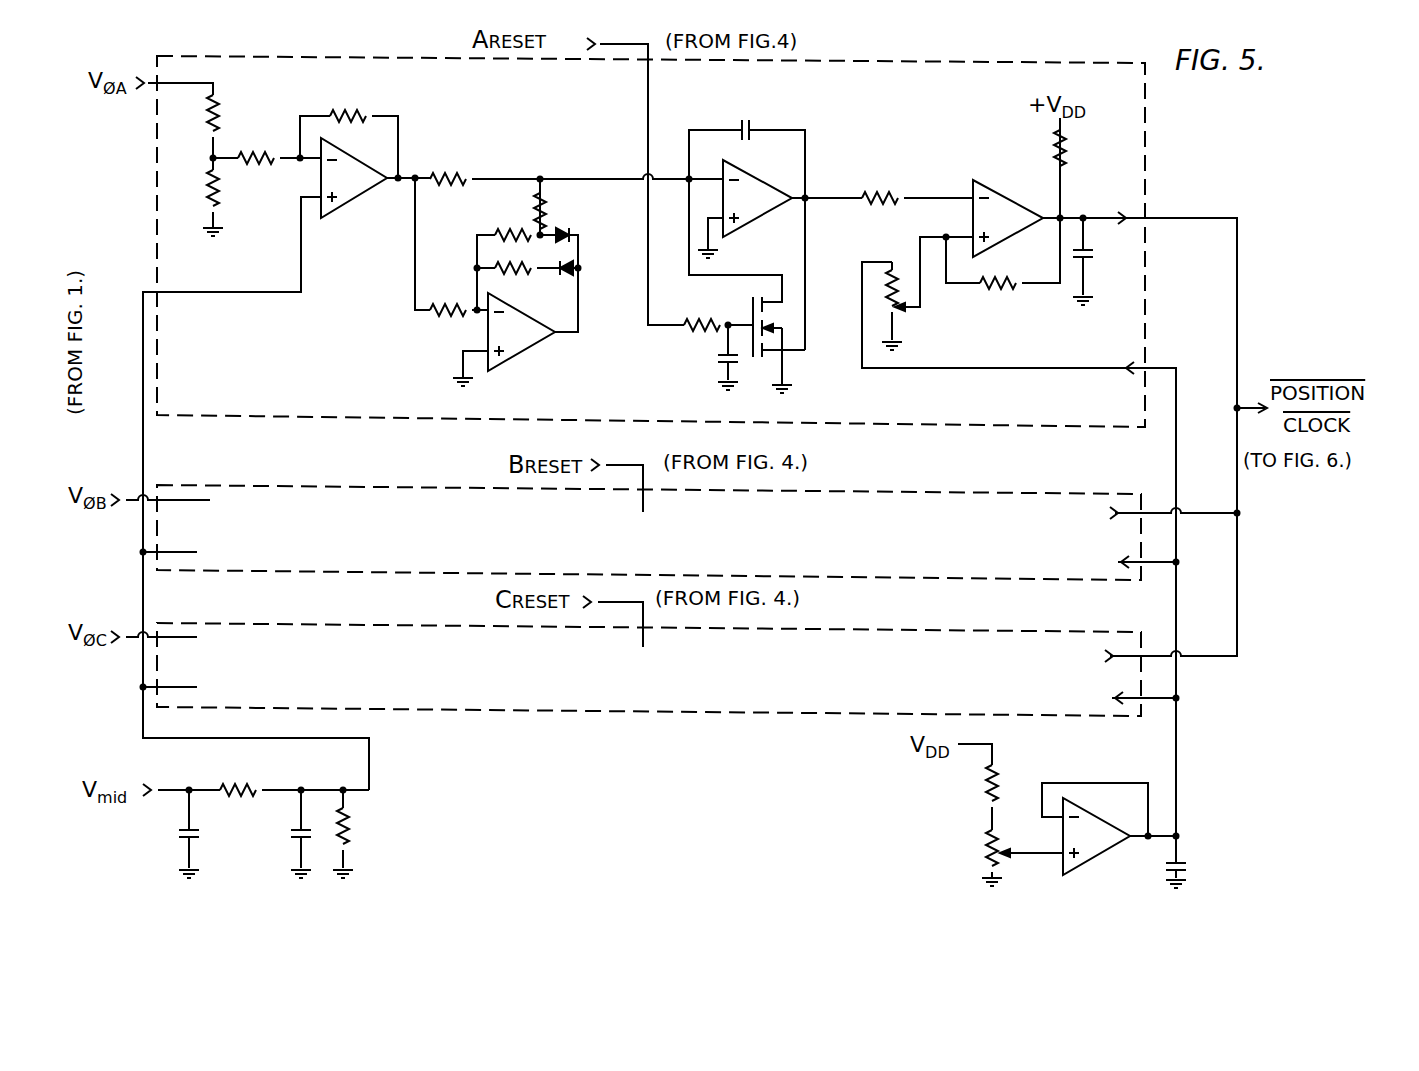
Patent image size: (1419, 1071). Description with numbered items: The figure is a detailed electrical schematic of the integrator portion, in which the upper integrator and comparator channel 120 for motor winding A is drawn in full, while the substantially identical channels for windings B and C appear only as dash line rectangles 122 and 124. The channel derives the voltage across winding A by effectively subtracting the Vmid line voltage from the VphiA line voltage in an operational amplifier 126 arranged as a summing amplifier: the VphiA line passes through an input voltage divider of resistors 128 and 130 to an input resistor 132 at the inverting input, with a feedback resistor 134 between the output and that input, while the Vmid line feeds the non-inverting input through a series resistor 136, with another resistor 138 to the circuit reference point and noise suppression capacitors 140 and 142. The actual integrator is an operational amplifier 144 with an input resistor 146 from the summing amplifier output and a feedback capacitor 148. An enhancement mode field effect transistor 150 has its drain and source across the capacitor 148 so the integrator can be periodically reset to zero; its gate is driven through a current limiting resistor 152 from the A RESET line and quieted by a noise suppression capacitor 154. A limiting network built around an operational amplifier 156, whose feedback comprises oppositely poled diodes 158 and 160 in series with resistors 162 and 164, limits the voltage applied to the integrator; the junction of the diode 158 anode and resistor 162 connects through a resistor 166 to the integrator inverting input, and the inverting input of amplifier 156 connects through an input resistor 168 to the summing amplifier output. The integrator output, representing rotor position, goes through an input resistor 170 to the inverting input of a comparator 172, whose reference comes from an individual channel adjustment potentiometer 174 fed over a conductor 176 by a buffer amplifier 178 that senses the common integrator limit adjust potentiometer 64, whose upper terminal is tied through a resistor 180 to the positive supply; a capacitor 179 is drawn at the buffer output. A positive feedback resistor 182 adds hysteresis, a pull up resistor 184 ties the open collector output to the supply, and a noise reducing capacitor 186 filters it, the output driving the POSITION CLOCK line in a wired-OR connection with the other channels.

The common integrator limit adjust potentiometer 64 is at (985, 847).
The integrator and comparator channel 120 is at (1150, 192).
The integrator channel 122 is at (908, 493).
The integrator channel 124 is at (893, 632).
The operational amplifier 126 is at (347, 205).
The resistor 128 is at (219, 122).
The resistor 130 is at (222, 188).
The input resistor 132 is at (272, 152).
The feedback resistor 134 is at (361, 110).
The series resistor 136 is at (256, 782).
The resistor 138 is at (350, 829).
The noise suppression capacitor 140 is at (180, 840).
The noise suppression capacitor 142 is at (292, 841).
The operational amplifier 144 is at (775, 183).
The input resistor 146 is at (455, 158).
The feedback capacitor 148 is at (749, 120).
The enhancement mode field effect transistor 150 is at (756, 302).
The current limiting resistor 152 is at (690, 323).
The noise suppression capacitor 154 is at (718, 360).
The operational amplifier 156 is at (536, 350).
The diode 158 is at (566, 232).
The diode 160 is at (562, 272).
The resistor 162 is at (508, 230).
The resistor 164 is at (501, 275).
The resistor 166 is at (547, 218).
The input resistor 168 is at (437, 312).
The input resistor 170 is at (893, 190).
The comparator 172 is at (1000, 182).
The individual channel adjustment potentiometer 174 is at (900, 314).
The conductor 176 is at (1176, 382).
The buffer amplifier 178 is at (1115, 848).
The capacitor 179 is at (1182, 860).
The resistor 180 is at (988, 782).
The positive feedback resistor 182 is at (1004, 290).
The pull up resistor 184 is at (1068, 168).
The noise reducing capacitor 186 is at (1087, 262).